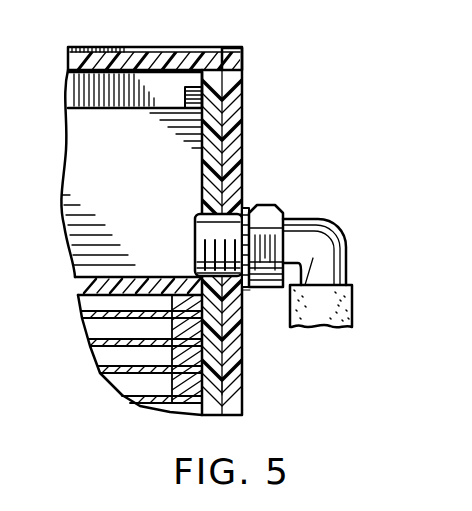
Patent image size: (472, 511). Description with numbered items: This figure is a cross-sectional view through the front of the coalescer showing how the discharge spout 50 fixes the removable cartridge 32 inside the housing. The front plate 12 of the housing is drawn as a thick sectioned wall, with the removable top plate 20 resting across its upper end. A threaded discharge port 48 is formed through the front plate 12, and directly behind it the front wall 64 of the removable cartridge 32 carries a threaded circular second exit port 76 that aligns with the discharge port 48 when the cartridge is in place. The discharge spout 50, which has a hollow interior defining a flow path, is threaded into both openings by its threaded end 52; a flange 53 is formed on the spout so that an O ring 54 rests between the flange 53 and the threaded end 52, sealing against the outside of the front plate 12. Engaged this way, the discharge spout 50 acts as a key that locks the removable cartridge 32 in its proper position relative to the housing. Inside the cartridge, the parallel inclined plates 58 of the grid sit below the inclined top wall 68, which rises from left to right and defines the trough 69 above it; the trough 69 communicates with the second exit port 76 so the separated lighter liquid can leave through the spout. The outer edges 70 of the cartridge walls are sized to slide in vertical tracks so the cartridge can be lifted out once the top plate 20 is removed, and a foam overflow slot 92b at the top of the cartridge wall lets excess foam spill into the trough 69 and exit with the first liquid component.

The front plate 12 is at (237, 108).
The removable top plate 20 is at (112, 47).
The foam overflow slot 92b is at (75, 100).
The front wall 64 is at (202, 170).
The trough 69 is at (92, 212).
The second exit port 76 is at (195, 232).
The inclined top wall 68 is at (144, 277).
The threaded end 52 is at (245, 172).
The O ring 54 is at (249, 215).
The flange 53 is at (280, 208).
The discharge spout 50 is at (346, 242).
The discharge port 48 is at (243, 294).
The parallel inclined plates 58 is at (92, 345).
The outer edges 70 is at (228, 378).
The removable cartridge 32 is at (132, 397).